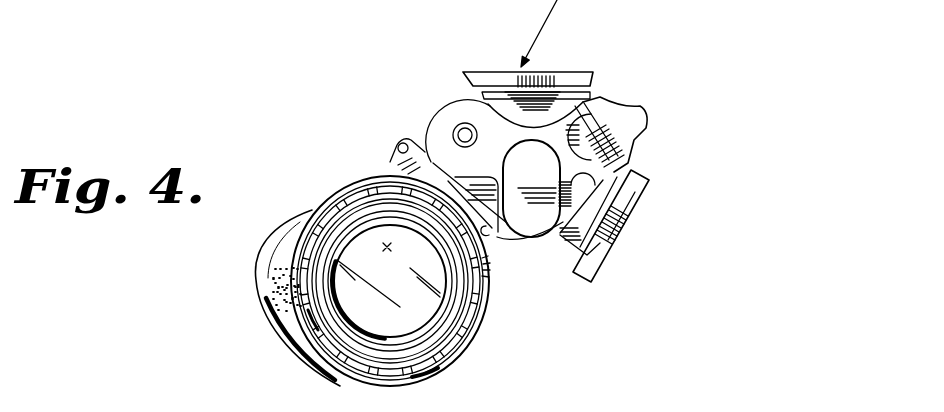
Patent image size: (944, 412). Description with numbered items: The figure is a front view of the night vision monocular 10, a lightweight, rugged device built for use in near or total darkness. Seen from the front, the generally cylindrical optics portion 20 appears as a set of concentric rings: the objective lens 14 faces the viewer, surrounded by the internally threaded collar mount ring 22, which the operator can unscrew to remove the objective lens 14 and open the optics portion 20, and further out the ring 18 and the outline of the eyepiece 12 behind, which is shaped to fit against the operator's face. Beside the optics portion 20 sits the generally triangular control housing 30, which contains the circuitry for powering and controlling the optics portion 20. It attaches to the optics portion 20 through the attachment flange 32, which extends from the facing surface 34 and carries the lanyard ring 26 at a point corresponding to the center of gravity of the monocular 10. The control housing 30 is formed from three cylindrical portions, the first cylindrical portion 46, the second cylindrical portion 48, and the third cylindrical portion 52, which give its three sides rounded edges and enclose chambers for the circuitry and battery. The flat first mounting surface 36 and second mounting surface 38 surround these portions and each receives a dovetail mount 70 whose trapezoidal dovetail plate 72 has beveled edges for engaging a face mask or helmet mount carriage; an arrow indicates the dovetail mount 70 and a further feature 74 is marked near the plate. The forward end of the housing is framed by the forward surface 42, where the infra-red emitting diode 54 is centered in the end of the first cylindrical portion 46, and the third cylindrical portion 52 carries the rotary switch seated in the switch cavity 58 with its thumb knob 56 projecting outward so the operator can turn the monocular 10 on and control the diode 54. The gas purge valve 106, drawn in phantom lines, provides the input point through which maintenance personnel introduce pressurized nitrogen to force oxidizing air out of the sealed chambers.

The night vision monocular 10 is at (264, 202).
The eyepiece 12 is at (267, 256).
The objective lens 14 is at (340, 190).
The inner ring 18 is at (440, 357).
The optics portion 20 is at (300, 365).
The collar mount ring 22 is at (290, 291).
The lanyard ring 26 is at (397, 140).
The control housing 30 is at (662, 169).
The attachment flange 32 is at (500, 287).
The facing surface 34 is at (402, 225).
The first mounting surface 36 is at (600, 88).
The second mounting surface 38 is at (613, 250).
The forward surface 42 is at (488, 116).
The first cylindrical portion 46 is at (437, 117).
The second cylindrical portion 48 is at (636, 148).
The third cylindrical portion 52 is at (537, 188).
The infra-red emitting diode 54 is at (463, 123).
The thumb knob 56 is at (643, 113).
The switch cavity 58 is at (622, 113).
The dovetail mount 70 is at (642, 236).
The dovetail plate 72 is at (568, 72).
The plate edge 74 is at (637, 195).
The gas purge valve 106 is at (492, 240).